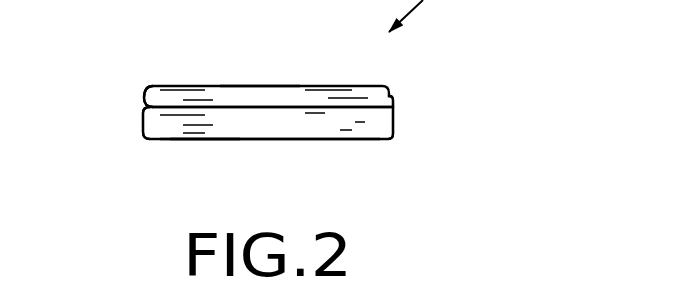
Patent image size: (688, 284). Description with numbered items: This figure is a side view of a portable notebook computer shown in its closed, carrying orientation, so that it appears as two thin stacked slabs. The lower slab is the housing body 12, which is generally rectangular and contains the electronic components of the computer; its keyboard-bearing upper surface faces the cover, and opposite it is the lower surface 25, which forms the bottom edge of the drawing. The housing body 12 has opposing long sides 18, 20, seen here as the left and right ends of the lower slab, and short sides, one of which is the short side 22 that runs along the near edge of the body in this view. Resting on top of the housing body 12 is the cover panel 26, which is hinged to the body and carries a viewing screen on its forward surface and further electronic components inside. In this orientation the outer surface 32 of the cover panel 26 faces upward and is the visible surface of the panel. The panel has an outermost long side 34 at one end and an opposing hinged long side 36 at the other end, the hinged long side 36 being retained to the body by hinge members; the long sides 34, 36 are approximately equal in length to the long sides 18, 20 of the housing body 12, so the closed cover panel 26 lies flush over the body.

The housing body 12 is at (197, 143).
The long side 18 is at (140, 130).
The long side 20 is at (393, 130).
The short side 22 is at (168, 128).
The lower surface 25 is at (315, 140).
The cover panel 26 is at (191, 81).
The outer surface 32 is at (248, 85).
The outermost long side 34 is at (140, 102).
The hinged long side 36 is at (387, 87).